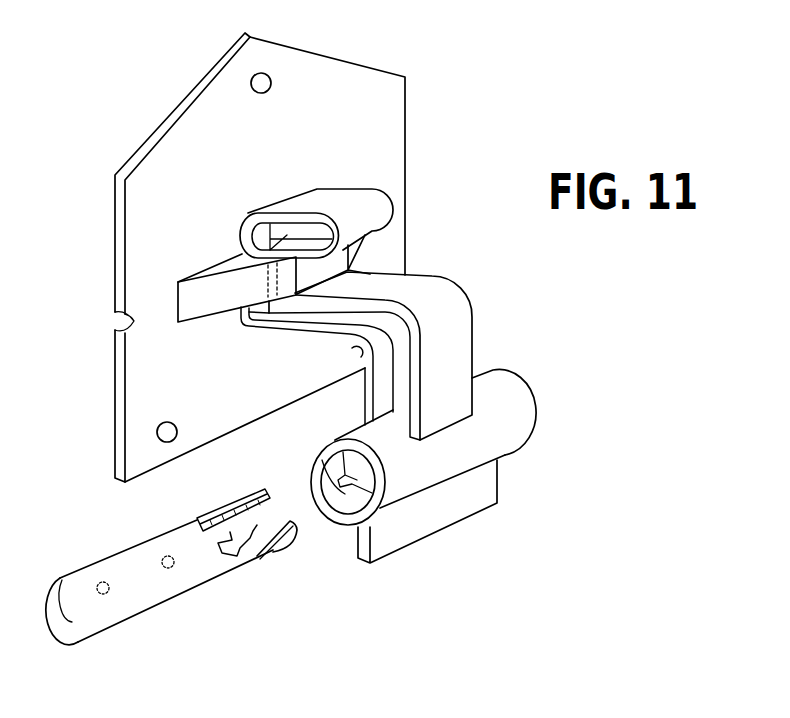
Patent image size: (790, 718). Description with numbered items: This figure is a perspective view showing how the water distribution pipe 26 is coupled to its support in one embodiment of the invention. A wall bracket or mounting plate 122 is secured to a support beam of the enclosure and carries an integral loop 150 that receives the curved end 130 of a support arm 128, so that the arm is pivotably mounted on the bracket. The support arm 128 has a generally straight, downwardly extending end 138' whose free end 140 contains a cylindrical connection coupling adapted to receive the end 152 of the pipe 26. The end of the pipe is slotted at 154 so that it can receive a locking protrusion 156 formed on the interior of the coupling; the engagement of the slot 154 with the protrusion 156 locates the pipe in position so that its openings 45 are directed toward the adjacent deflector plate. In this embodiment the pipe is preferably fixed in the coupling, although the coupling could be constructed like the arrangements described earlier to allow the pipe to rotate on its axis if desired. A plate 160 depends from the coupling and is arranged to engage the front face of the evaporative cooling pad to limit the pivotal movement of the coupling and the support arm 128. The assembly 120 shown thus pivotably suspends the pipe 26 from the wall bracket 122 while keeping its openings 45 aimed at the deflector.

The mounting plate 120 is at (317, 67).
The mounting plate 122 is at (213, 306).
The curved end 130 is at (307, 217).
The integral loop 150 is at (280, 233).
The support arm 128 is at (433, 277).
The downwardly extending end 138' is at (408, 373).
The free end 140 is at (503, 445).
The locking protrusion 156 is at (332, 473).
The plate 160 is at (453, 503).
The pipe 26 is at (180, 583).
The end of pipe 152 is at (275, 555).
The slot 154 is at (235, 505).
The openings 45 is at (105, 592).